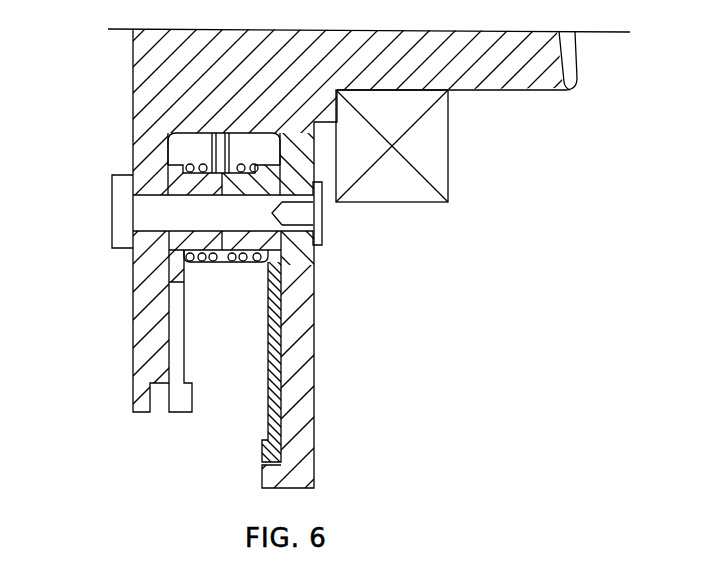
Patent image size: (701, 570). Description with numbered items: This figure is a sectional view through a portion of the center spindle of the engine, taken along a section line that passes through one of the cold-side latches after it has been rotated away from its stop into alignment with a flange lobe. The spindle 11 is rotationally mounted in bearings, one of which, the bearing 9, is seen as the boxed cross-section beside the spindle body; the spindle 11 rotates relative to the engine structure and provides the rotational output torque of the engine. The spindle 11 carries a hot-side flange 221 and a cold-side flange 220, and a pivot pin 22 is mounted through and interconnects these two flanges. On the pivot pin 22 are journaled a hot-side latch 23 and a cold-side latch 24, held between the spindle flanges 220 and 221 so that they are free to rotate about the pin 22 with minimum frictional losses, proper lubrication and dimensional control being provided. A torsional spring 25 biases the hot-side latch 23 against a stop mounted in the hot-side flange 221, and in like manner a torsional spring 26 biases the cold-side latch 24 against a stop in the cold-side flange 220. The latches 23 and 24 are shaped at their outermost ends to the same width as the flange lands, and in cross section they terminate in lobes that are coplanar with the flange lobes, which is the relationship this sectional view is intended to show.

The bearing 9 is at (449, 160).
The spindle 11 is at (133, 78).
The pivot pin 22 is at (112, 214).
The hot-side latch 23 is at (168, 380).
The cold-side latch 24 is at (278, 365).
The torsional spring 25 is at (185, 163).
The torsional spring 26 is at (267, 261).
The cold-side flange 220 is at (316, 443).
The hot-side flange 221 is at (150, 385).